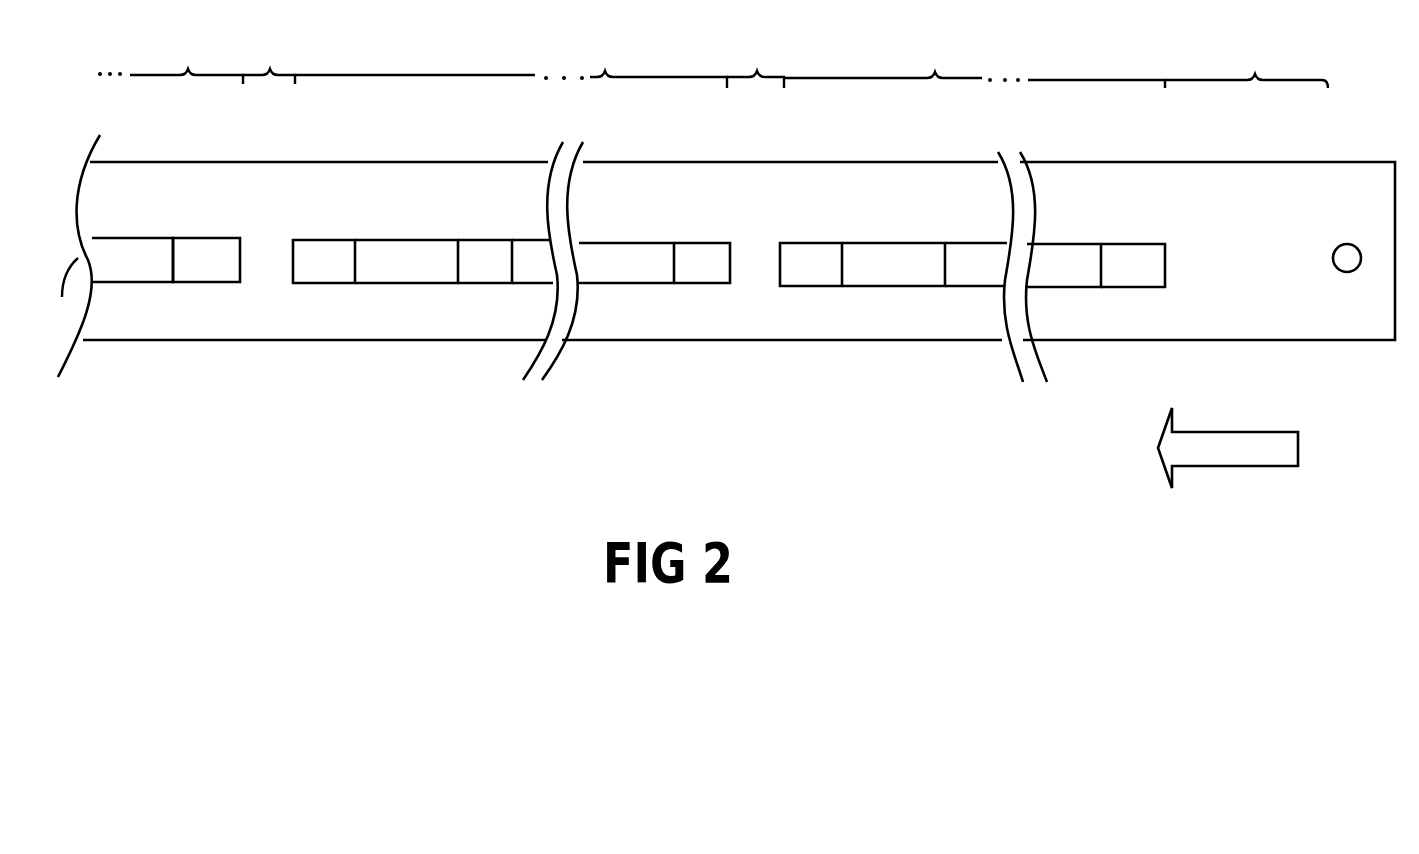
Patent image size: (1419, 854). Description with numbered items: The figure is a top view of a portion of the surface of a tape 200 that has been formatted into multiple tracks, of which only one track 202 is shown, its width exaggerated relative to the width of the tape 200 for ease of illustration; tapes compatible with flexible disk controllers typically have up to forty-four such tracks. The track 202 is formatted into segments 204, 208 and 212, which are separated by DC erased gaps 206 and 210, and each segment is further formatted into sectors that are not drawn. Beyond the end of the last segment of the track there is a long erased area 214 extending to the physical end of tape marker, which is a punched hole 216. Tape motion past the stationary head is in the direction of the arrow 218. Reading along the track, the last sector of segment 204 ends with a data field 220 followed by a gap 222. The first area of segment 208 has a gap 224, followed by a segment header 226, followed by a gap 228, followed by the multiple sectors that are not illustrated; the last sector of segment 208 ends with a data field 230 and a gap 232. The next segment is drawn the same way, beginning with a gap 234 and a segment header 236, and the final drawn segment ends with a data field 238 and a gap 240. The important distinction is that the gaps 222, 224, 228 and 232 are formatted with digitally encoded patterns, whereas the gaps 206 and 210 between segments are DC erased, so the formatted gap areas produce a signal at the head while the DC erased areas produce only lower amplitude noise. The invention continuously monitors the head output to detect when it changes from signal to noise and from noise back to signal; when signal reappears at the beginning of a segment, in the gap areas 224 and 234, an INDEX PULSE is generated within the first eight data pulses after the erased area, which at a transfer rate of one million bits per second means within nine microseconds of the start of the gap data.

The tape 200 is at (344, 217).
The track 202 is at (59, 293).
The segment 204 is at (186, 61).
The DC erased gap 206 is at (269, 58).
The segment 208 is at (656, 65).
The DC erased gap 210 is at (755, 63).
The segment 212 is at (974, 64).
The long erased area 214 is at (1246, 63).
The punched hole 216 is at (1352, 272).
The arrow 218 is at (1228, 466).
The data field 220 is at (122, 282).
The gap 222 is at (200, 282).
The gap 224 is at (313, 283).
The segment header 226 is at (395, 283).
The gap 228 is at (480, 283).
The data field 230 is at (602, 283).
The gap 232 is at (688, 283).
The gap 234 is at (828, 286).
The segment header 236 is at (918, 286).
The data field 238 is at (1050, 287).
The gap 240 is at (1128, 287).